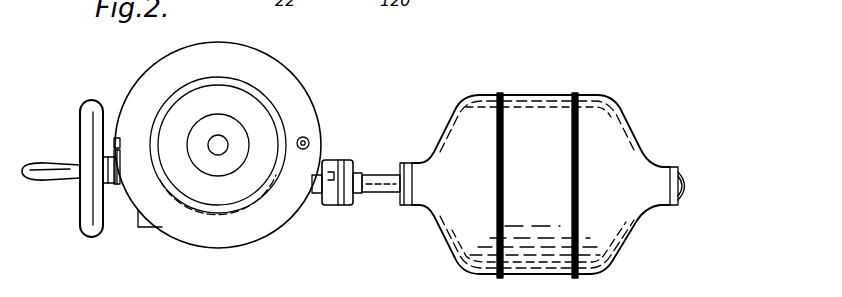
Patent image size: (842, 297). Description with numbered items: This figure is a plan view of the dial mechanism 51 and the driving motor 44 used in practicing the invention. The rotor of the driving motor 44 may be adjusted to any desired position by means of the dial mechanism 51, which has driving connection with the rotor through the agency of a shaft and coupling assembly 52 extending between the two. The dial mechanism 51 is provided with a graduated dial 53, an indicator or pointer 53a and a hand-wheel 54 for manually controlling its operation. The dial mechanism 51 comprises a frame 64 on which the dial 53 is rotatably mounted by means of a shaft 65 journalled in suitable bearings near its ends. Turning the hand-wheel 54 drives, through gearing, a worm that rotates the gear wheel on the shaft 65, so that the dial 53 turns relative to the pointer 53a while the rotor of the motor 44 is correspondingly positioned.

The driving motor 44 is at (672, 115).
The dial mechanism 51 is at (333, 73).
The shaft and coupling assembly 52 is at (340, 160).
The graduated dial 53 is at (292, 213).
The indicator or pointer 53a is at (114, 136).
The hand-wheel 54 is at (82, 210).
The frame 64 is at (148, 228).
The shaft 65 is at (218, 136).